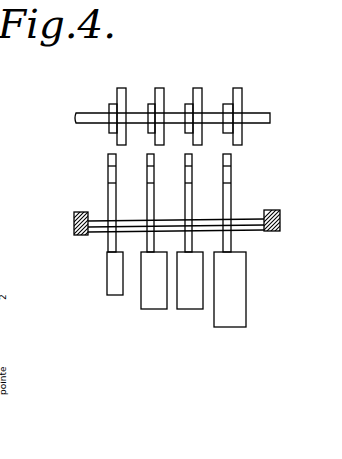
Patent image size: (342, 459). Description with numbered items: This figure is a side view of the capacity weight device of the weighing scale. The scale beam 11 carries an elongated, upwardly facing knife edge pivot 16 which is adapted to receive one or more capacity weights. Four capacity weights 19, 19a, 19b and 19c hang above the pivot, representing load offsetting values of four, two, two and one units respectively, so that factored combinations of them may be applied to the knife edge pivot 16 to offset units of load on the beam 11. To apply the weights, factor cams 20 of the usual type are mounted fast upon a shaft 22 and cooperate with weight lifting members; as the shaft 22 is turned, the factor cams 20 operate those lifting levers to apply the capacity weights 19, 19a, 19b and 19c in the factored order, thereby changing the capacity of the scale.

The scale beam 11 is at (280, 211).
The knife edge pivot 16 is at (190, 239).
The capacity weight 19 is at (235, 320).
The capacity weight 19a is at (193, 307).
The capacity weight 19b is at (156, 300).
The capacity weight 19c is at (113, 295).
The factor cam 20 is at (193, 87).
The shaft 22 is at (258, 112).